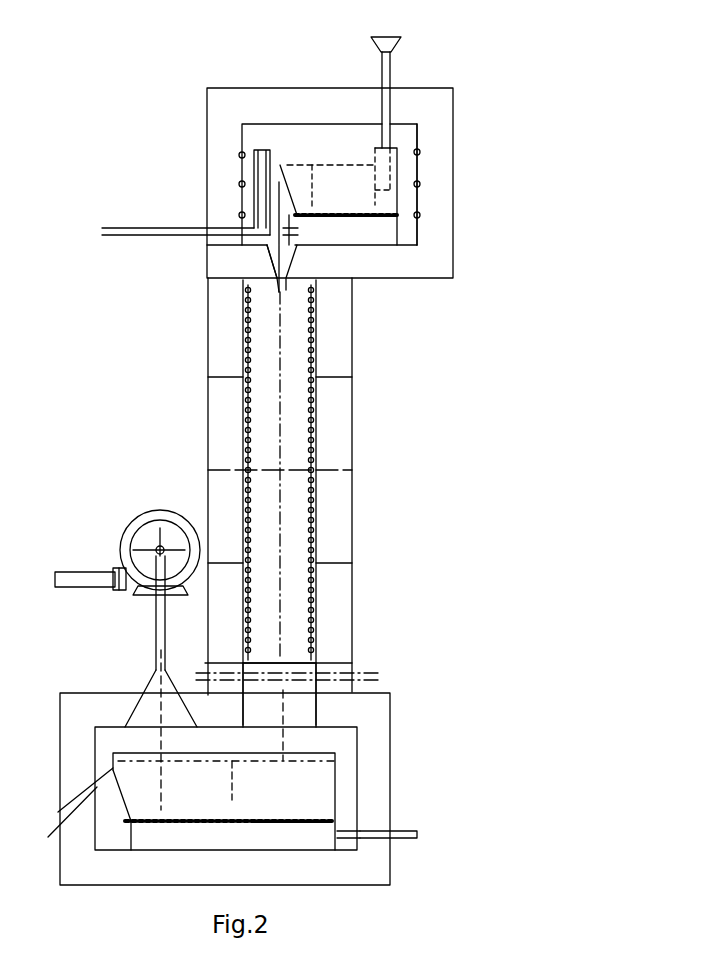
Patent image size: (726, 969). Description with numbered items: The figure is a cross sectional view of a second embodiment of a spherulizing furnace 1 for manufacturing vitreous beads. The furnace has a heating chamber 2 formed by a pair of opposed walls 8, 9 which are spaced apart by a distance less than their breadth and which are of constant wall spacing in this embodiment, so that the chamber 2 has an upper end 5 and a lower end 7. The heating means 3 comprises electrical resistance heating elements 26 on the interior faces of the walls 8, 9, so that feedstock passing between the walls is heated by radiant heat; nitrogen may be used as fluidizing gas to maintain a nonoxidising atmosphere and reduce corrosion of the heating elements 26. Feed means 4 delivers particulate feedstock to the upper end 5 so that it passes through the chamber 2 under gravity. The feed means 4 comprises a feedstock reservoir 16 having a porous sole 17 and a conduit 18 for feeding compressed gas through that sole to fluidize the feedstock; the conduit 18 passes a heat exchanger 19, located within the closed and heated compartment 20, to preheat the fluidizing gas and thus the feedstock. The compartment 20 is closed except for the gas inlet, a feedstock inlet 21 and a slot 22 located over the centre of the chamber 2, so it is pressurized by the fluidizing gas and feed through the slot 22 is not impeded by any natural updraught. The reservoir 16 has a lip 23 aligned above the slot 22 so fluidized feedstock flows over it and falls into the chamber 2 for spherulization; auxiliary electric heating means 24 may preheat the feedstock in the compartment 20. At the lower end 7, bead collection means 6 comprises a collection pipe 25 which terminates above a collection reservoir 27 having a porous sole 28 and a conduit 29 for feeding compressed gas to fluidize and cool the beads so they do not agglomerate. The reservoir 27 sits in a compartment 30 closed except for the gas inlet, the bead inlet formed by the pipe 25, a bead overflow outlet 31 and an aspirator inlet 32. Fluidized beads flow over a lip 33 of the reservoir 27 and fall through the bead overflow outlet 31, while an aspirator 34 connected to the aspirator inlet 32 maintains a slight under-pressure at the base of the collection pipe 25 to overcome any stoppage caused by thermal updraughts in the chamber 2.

The spherulizing furnace 1 is at (203, 79).
The chamber 2 is at (355, 512).
The heating means 3 is at (318, 415).
The feed means 4 is at (457, 223).
The upper end 5 is at (292, 289).
The collecting means 6 is at (56, 691).
The lower end 7 is at (270, 646).
The wall 8 is at (226, 293).
The wall 9 is at (338, 327).
The feedstock reservoir 16 is at (325, 150).
The porous sole 17 is at (310, 221).
The conduit 18 is at (138, 229).
The heat exchanger 19 is at (247, 136).
The compartment 20 is at (400, 134).
The feedstock inlet 21 is at (385, 40).
The slot 22 is at (280, 293).
The lip 23 is at (264, 150).
The auxiliary electric heating means 24 is at (420, 184).
The collection pipe 25 is at (310, 705).
The electrical resistance heating elements 26 is at (250, 436).
The collection reservoir 27 is at (327, 794).
The porous sole 28 is at (170, 822).
The conduit 29 is at (395, 842).
The compartment 30 is at (358, 829).
The bead overflow outlet 31 is at (58, 821).
The aspirator inlet 32 is at (150, 705).
The lip 33 is at (113, 774).
The aspirator 34 is at (130, 534).